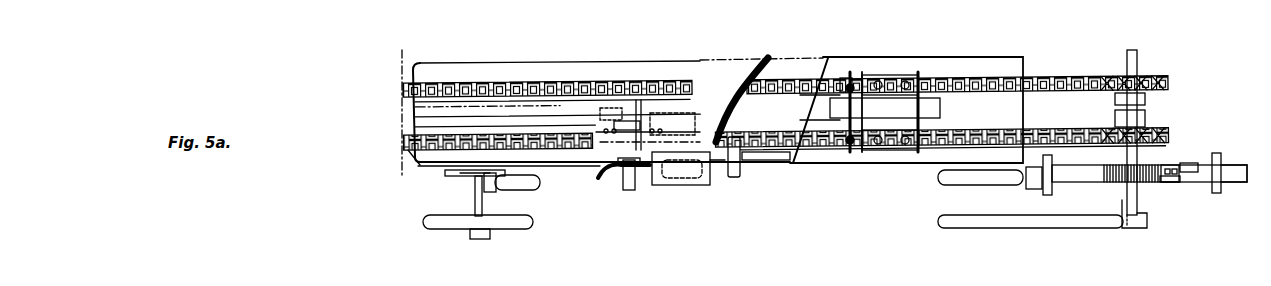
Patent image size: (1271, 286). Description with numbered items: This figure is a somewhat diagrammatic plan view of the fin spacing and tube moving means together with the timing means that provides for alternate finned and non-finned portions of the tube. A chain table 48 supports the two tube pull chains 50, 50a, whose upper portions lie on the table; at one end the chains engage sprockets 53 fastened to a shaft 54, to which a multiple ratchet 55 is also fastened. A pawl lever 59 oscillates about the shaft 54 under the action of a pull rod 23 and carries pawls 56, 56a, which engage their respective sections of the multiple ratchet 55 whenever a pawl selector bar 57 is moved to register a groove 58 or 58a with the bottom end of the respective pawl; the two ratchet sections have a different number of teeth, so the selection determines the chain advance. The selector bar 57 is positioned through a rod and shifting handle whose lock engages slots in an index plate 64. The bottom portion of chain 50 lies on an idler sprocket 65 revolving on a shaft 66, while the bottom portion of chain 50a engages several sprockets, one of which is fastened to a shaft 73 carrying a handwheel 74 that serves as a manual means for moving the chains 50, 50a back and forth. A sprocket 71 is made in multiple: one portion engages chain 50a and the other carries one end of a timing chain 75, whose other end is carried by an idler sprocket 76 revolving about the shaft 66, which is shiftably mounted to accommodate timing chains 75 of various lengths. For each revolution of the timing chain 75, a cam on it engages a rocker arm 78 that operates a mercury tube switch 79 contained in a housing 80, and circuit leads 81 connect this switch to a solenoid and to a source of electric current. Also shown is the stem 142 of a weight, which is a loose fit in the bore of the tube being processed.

The tube pull chain 50 is at (428, 82).
The tube pull chain 50a is at (412, 157).
The index plate 64 is at (452, 176).
The shaft 73 is at (476, 197).
The handwheel 74 is at (452, 230).
The sprocket 71 is at (600, 118).
The circuit leads 81 is at (600, 180).
The rocker arm 78 is at (650, 190).
The housing 80 is at (680, 186).
The mercury tube switch 79 is at (706, 186).
The shaft 66 is at (737, 178).
The idler sprocket 76 is at (762, 150).
The timing chain 75 is at (738, 75).
The idler sprocket 65 is at (762, 95).
The chain table 48 is at (856, 163).
The stem 142 is at (855, 78).
The pull rod 23 is at (1031, 228).
The shaft 54 is at (1127, 57).
The sprocket 53 is at (1150, 74).
The multiple ratchet 55 is at (1108, 184).
The pawl 56 is at (1170, 183).
The pawl 56a is at (1172, 184).
The groove 58a is at (1172, 158).
The groove 58 is at (1192, 163).
The pawl selector bar 57 is at (1232, 184).
The pawl lever 59 is at (1124, 230).